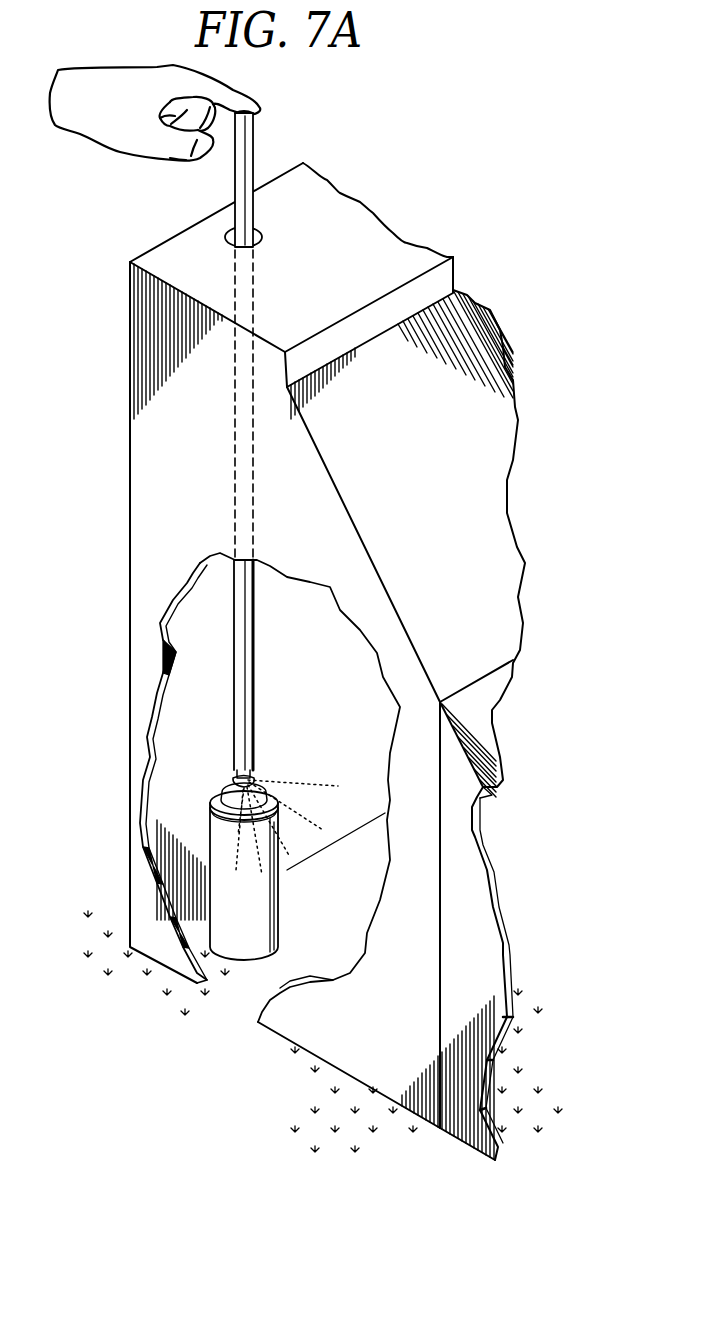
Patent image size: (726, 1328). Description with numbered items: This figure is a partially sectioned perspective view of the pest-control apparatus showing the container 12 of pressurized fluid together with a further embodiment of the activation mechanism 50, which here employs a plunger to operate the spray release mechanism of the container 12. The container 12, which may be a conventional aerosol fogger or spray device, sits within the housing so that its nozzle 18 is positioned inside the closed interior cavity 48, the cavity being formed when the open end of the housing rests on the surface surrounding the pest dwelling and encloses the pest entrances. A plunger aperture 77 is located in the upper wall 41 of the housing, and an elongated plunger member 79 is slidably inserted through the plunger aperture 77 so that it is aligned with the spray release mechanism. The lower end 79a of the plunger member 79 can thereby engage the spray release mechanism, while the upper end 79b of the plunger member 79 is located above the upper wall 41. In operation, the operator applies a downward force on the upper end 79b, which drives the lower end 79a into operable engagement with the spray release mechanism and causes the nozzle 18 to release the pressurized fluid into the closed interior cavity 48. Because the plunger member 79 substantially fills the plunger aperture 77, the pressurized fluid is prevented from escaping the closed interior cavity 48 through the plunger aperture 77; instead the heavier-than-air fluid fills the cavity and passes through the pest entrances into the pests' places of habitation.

The container 12 is at (278, 890).
The nozzle 18 is at (230, 773).
The upper wall 41 is at (375, 223).
The closed interior cavity 48 is at (341, 934).
The activation mechanism 50 is at (277, 687).
The plunger aperture 77 is at (260, 230).
The plunger member 79 is at (233, 173).
The lower end of plunger member 79a is at (253, 767).
The upper end of plunger member 79b is at (255, 125).